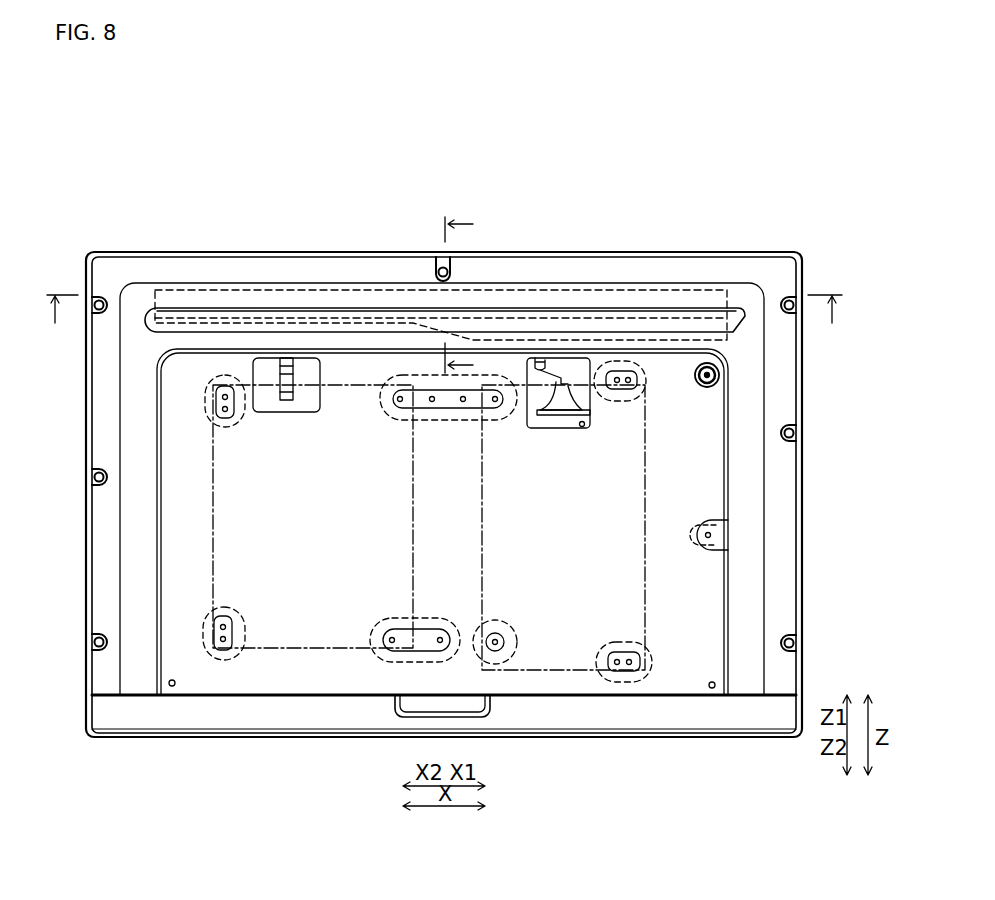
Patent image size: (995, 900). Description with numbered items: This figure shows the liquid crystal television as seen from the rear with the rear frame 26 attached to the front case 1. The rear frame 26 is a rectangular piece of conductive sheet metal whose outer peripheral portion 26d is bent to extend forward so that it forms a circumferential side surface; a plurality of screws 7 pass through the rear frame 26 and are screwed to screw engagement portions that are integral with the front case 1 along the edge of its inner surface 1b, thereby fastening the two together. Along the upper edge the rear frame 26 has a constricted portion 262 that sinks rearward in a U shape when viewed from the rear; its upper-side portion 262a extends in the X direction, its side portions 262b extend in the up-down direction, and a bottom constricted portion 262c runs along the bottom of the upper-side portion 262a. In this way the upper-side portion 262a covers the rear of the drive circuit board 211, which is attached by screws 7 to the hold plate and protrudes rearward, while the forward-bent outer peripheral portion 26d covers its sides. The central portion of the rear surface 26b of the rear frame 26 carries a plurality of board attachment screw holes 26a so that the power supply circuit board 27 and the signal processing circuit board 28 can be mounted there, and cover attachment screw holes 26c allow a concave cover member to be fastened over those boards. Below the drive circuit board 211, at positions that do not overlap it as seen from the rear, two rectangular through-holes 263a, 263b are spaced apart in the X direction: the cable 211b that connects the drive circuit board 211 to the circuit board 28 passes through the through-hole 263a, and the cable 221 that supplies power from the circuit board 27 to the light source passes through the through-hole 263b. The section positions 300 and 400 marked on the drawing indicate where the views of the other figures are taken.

The front case 1 is at (262, 735).
The inner surface 1b is at (583, 728).
The screws 7 is at (93, 300).
The rear frame 26 is at (208, 277).
The board attachment screw holes 26a is at (215, 403).
The rear surface 26b is at (527, 266).
The cover attachment screw holes 26c is at (705, 390).
The outer peripheral portion 26d is at (86, 582).
The circuit board 27 is at (210, 518).
The circuit board 28 is at (656, 548).
The drive circuit board 211 is at (277, 290).
The cable 211b is at (561, 414).
The cable 221 is at (286, 401).
The constricted portion 262 is at (745, 685).
The upper-side portion of constricted portion 262a is at (680, 290).
The side portions of constricted portion 262b is at (138, 512).
The bottom constricted portion 262c is at (627, 318).
The through-hole 263a is at (590, 416).
The through-hole 263b is at (308, 414).
The section line position 300 is at (481, 297).
The section line position 400 is at (444, 325).